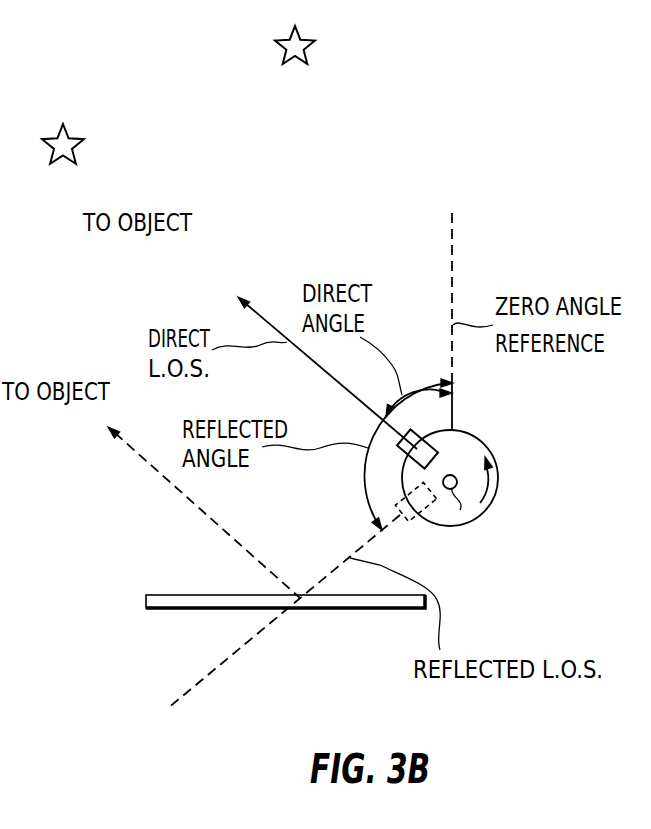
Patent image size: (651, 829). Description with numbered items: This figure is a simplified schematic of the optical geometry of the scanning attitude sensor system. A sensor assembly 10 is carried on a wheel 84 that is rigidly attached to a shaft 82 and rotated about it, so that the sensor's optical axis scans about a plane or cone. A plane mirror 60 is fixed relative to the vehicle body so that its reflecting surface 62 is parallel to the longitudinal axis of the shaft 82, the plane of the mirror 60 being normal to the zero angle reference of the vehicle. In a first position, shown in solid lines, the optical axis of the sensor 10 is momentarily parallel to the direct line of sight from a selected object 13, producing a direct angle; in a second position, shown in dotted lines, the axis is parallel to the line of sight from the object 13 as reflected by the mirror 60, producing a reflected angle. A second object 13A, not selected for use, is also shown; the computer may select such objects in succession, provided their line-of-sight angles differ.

The object 13A is at (314, 40).
The object 13 is at (73, 138).
The sensor assembly 10 is at (420, 432).
The wheel 84 is at (497, 472).
The shaft 82 is at (458, 511).
The reflecting surface 62 is at (163, 593).
The plane mirror 60 is at (185, 610).